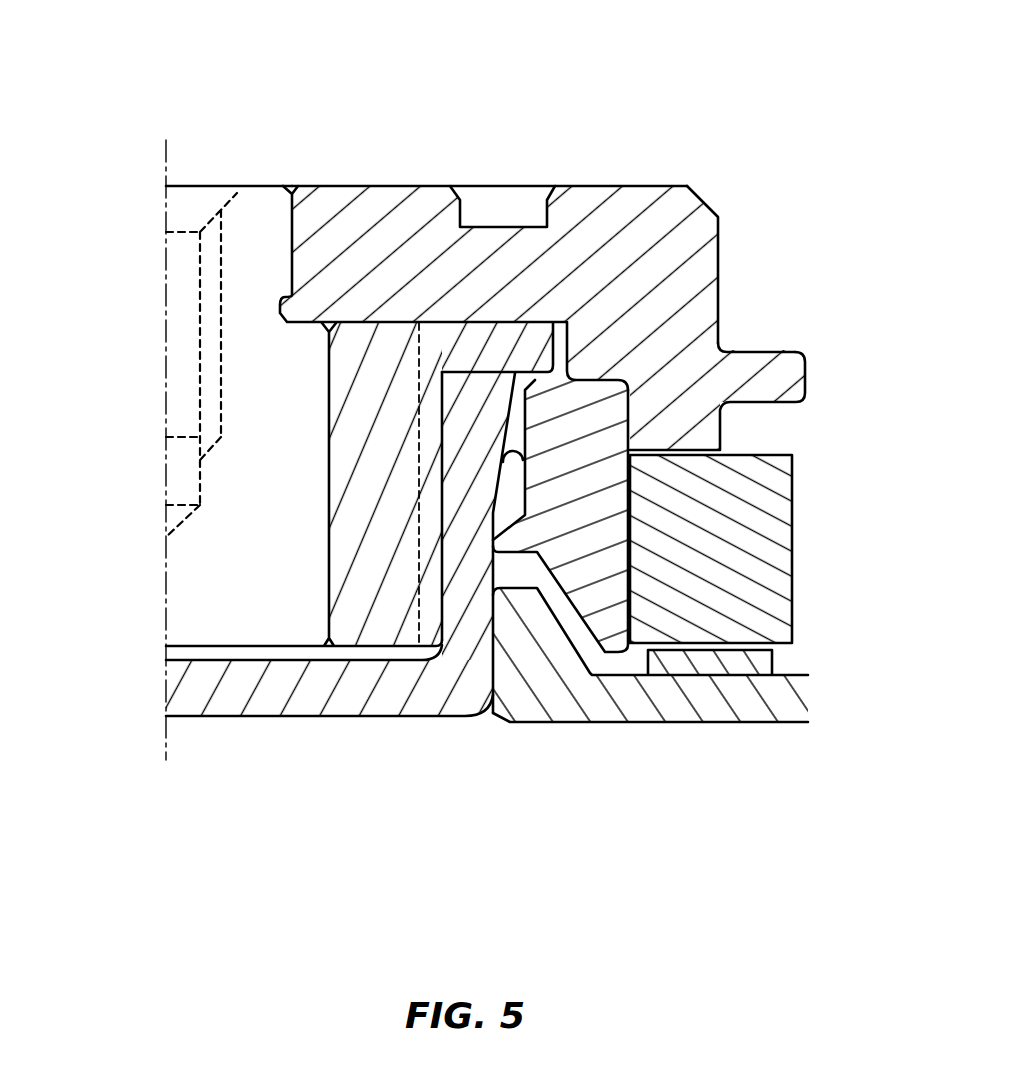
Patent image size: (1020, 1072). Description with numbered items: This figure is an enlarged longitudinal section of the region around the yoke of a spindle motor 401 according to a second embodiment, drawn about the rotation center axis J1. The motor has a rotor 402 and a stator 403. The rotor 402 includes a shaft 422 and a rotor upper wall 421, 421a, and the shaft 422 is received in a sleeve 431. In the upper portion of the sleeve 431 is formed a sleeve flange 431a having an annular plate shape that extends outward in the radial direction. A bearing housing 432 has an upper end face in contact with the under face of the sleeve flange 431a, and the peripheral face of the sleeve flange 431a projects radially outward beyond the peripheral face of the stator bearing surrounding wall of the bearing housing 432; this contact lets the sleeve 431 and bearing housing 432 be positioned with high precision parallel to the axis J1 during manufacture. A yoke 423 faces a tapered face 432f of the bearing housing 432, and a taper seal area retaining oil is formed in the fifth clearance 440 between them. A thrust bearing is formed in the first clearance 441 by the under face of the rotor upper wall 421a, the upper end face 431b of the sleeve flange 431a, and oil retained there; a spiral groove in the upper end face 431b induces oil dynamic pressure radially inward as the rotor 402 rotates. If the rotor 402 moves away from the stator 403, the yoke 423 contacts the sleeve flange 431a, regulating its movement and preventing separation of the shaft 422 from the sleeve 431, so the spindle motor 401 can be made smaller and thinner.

The spindle motor 401 is at (290, 34).
The rotor 402 is at (503, 115).
The stator 403 is at (470, 786).
The rotor upper wall 421 is at (333, 196).
The rotor upper wall 421a is at (398, 273).
The shaft 422 is at (198, 192).
The yoke 423 is at (600, 583).
The sleeve 431 is at (340, 573).
The sleeve flange 431a is at (567, 258).
The upper end face 431b is at (535, 337).
The bearing housing 432 is at (457, 595).
The tapered face 432f is at (578, 398).
The fifth clearance 440 is at (523, 481).
The first clearance 441 is at (488, 303).
The rotation center axis J1 is at (165, 141).